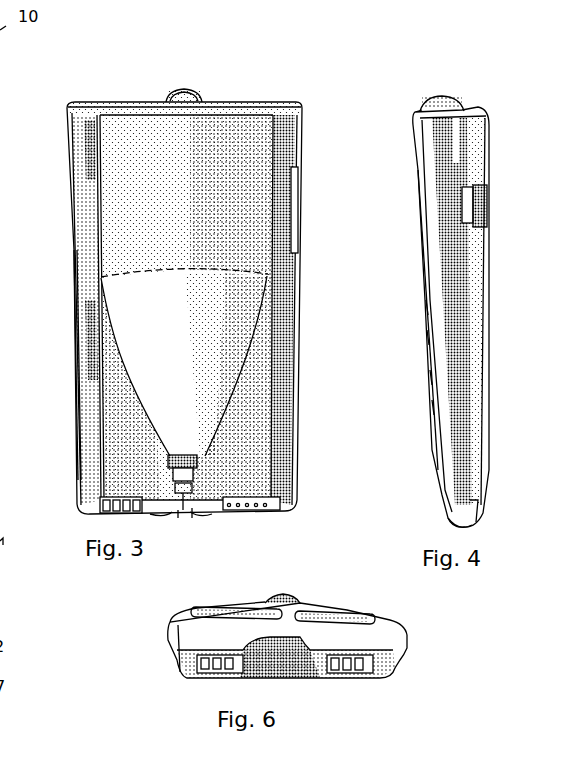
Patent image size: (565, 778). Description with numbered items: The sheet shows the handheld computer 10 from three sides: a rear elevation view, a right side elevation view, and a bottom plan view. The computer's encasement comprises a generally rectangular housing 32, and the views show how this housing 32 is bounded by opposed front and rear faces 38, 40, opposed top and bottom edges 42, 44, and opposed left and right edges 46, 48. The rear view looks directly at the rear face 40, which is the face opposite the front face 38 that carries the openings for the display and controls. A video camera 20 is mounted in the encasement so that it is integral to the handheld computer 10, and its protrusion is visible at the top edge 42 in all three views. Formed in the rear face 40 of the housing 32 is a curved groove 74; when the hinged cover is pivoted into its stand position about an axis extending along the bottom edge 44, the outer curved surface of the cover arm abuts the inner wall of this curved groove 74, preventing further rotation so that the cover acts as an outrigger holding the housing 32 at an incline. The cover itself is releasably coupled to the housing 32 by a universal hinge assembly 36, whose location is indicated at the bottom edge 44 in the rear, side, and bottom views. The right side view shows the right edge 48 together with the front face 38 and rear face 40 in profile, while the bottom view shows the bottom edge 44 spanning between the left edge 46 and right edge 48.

In FIG. 3, the handheld computer 10 is at (268, 65).
In FIG. 4, the handheld computer 10 is at (485, 75).
In FIG. 6, the handheld computer 10 is at (415, 688).
In FIG. 3, the video camera 20 is at (188, 87).
In FIG. 4, the video camera 20 is at (437, 95).
In FIG. 6, the video camera 20 is at (292, 596).
In FIG. 3, the housing 32 is at (303, 346).
In FIG. 4, the housing 32 is at (491, 336).
In FIG. 3, the universal hinge assembly 36 is at (188, 532).
In FIG. 4, the universal hinge assembly 36 is at (433, 521).
In FIG. 6, the universal hinge assembly 36 is at (302, 690).
In FIG. 4, the front face 38 is at (425, 292).
In FIG. 3, the rear face 40 is at (212, 220).
In FIG. 4, the rear face 40 is at (490, 284).
In FIG. 3, the top edge 42 is at (132, 98).
In FIG. 4, the top edge 42 is at (470, 110).
In FIG. 3, the bottom edge 44 is at (247, 516).
In FIG. 4, the bottom edge 44 is at (475, 525).
In FIG. 6, the bottom edge 44 is at (403, 624).
In FIG. 3, the left edge 46 is at (300, 266).
In FIG. 6, the left edge 46 is at (170, 640).
In FIG. 3, the right edge 48 is at (70, 298).
In FIG. 4, the right edge 48 is at (425, 370).
In FIG. 6, the right edge 48 is at (403, 648).
In FIG. 3, the curved groove 74 is at (188, 452).